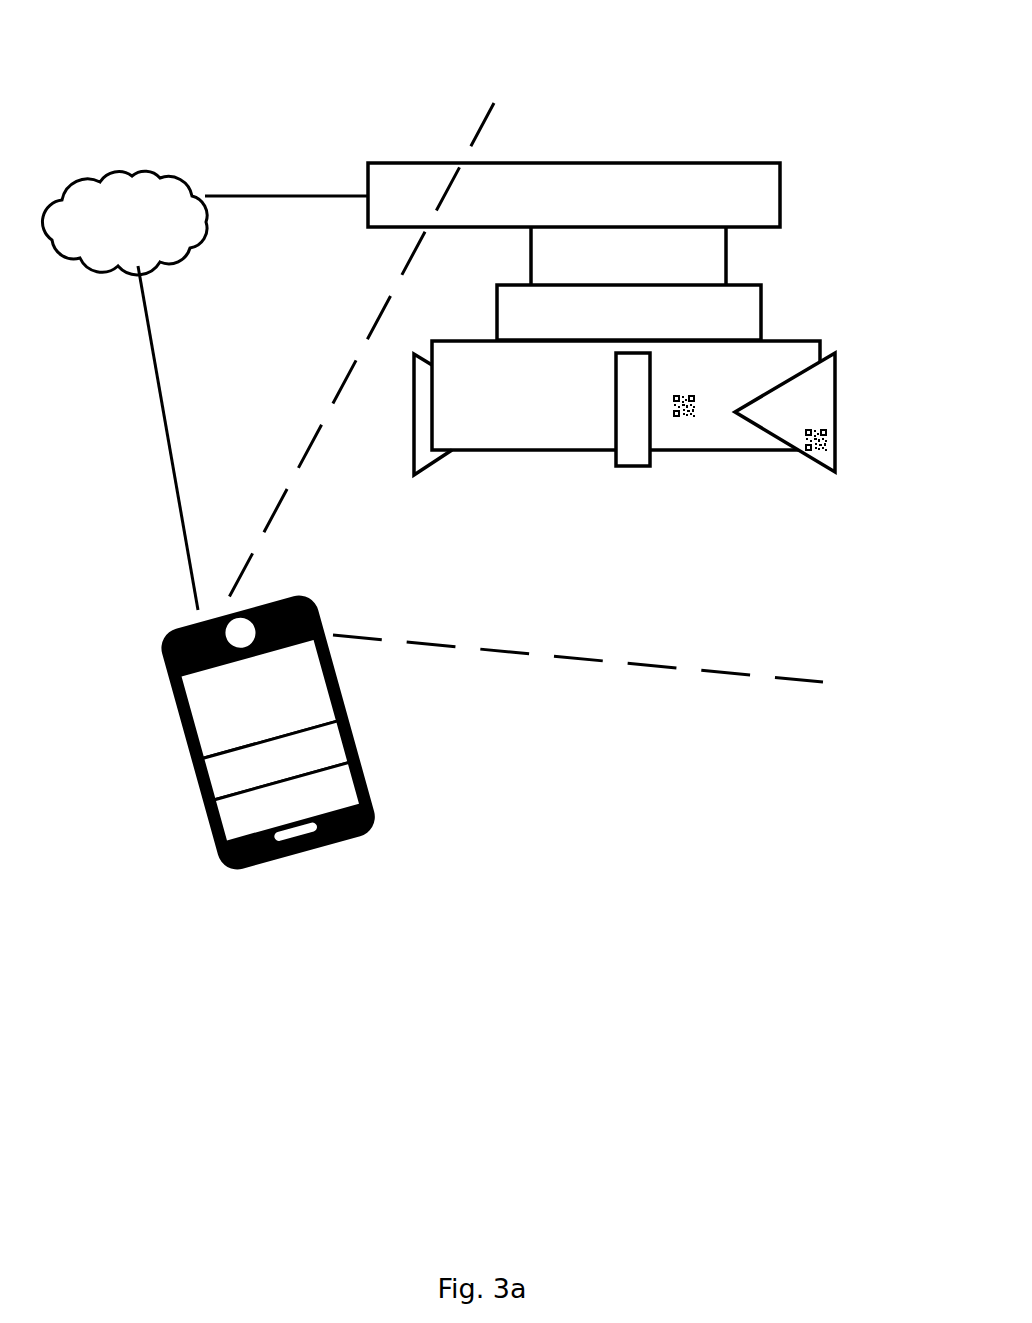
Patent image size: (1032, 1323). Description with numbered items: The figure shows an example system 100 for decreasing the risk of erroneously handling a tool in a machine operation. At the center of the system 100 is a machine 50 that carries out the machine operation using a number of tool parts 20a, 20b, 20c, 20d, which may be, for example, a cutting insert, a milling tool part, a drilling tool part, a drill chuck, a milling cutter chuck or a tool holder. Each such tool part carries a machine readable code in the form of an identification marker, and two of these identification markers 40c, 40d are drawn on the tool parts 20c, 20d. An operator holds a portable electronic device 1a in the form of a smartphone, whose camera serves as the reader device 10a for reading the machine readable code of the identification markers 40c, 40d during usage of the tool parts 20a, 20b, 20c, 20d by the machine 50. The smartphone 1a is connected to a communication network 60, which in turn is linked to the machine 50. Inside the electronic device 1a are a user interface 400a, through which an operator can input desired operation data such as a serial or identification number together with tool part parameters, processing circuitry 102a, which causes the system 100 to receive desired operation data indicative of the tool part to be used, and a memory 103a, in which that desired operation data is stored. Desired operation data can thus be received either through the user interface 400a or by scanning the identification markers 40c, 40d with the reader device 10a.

The system 100 is at (137, 93).
The communication network 60 is at (124, 223).
The machine 50 is at (783, 190).
The tool part 20a is at (435, 467).
The tool part 20b is at (616, 470).
The tool part 20c is at (803, 395).
The tool part 20d is at (708, 423).
The identification marker 40c is at (828, 450).
The identification marker 40d is at (680, 418).
The reader device 10a is at (195, 717).
The portable electronic device 1a is at (195, 757).
The user interface 400a is at (259, 698).
The processing circuitry 102a is at (276, 760).
The memory 103a is at (287, 802).